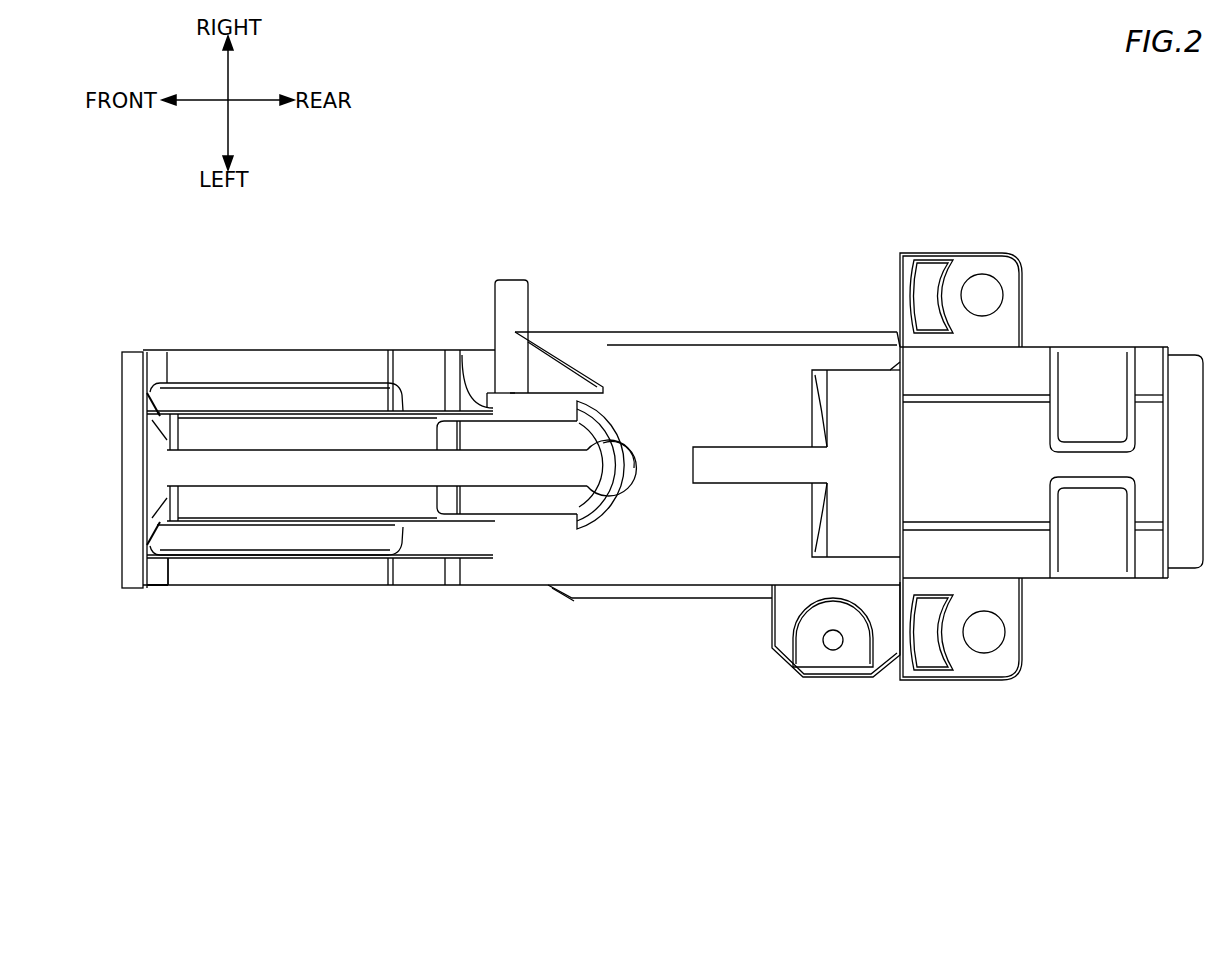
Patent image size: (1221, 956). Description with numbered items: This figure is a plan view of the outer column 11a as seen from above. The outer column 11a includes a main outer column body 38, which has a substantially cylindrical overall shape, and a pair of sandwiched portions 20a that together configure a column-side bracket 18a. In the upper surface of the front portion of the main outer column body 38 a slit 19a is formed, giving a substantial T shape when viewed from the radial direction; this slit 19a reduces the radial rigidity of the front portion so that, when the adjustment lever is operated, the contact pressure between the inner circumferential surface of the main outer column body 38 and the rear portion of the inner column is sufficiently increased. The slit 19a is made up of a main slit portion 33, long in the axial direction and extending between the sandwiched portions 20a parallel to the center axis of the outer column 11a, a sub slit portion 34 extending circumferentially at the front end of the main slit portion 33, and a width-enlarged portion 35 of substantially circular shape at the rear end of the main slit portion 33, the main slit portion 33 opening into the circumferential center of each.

The sub slit portion 34 is at (145, 441).
The sandwiched portion 20a is at (277, 367).
The width-enlarged portion 35 is at (615, 456).
The main outer column body 38 is at (747, 368).
The main slit portion 33 is at (296, 498).
The slit 19a is at (370, 498).
The column-side bracket 18a is at (190, 575).
The outer column 11a is at (545, 606).